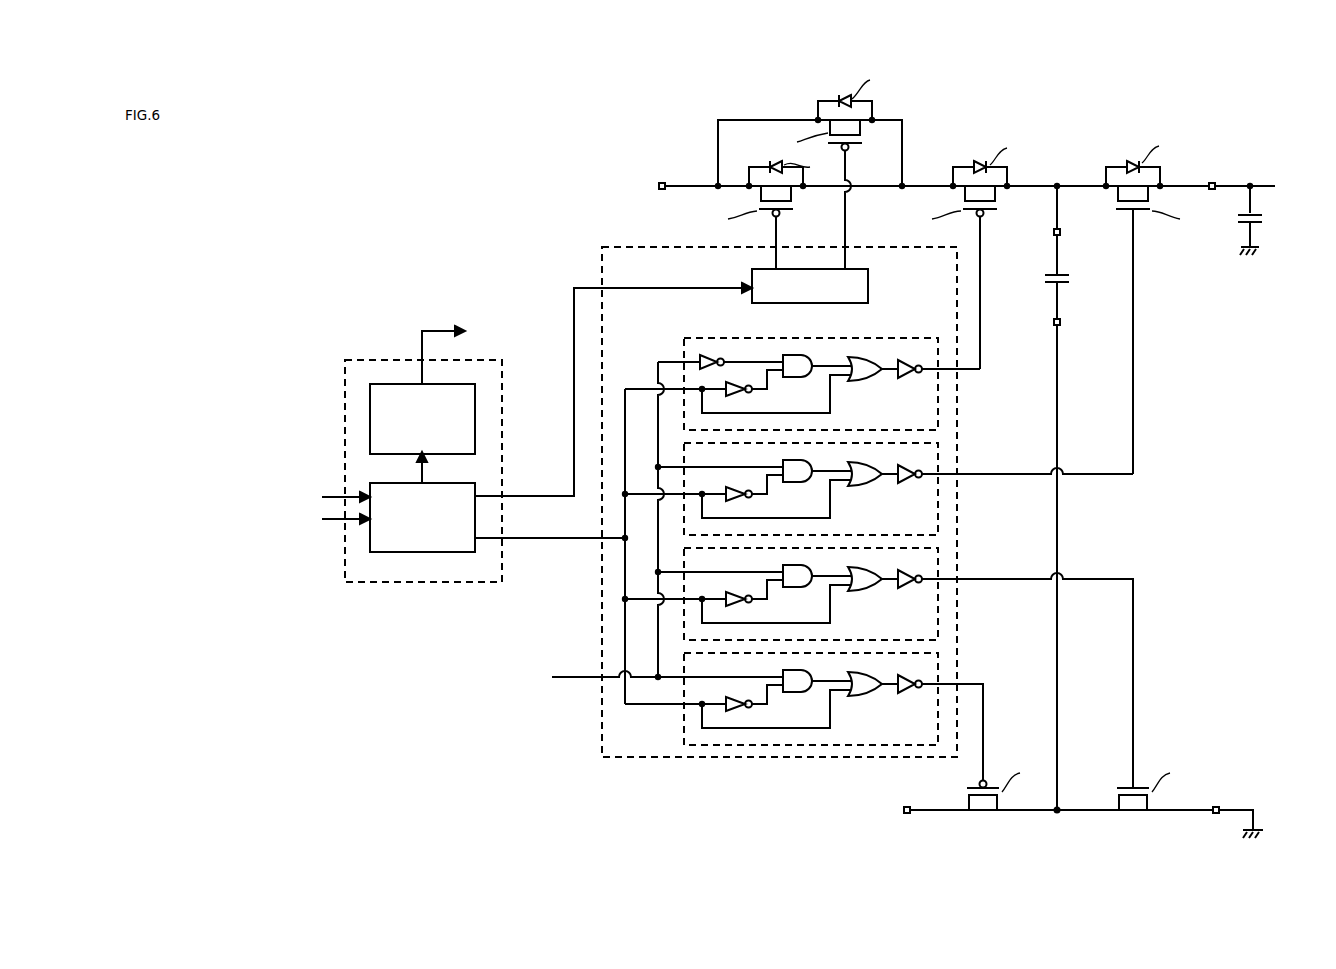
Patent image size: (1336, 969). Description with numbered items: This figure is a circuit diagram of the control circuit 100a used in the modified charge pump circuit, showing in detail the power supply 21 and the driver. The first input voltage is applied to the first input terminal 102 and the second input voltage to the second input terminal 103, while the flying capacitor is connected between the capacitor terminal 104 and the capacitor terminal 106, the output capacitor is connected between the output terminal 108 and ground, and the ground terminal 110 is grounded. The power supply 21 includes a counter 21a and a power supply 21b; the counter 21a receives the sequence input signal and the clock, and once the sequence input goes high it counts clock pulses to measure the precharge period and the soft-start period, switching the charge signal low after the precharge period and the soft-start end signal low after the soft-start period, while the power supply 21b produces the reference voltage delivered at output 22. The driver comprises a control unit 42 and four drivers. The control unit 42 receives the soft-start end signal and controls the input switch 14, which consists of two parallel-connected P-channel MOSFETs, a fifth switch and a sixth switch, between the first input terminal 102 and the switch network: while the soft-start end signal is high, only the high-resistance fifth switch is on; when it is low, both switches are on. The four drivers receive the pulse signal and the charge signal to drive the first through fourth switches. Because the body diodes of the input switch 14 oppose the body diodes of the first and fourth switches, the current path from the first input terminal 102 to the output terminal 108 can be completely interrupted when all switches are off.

The input switch 14 is at (902, 67).
The power supply 21 is at (428, 583).
The counter 21a is at (450, 553).
The power supply 21b is at (450, 455).
The reference voltage output 22 is at (454, 346).
The control unit 42 is at (870, 287).
The control circuit 100a is at (483, 873).
The first input terminal 102 is at (663, 181).
The second input terminal 103 is at (908, 814).
The capacitor terminal 104 is at (1061, 232).
The capacitor terminal 106 is at (1061, 322).
The output terminal 108 is at (1213, 181).
The ground terminal 110 is at (1214, 814).